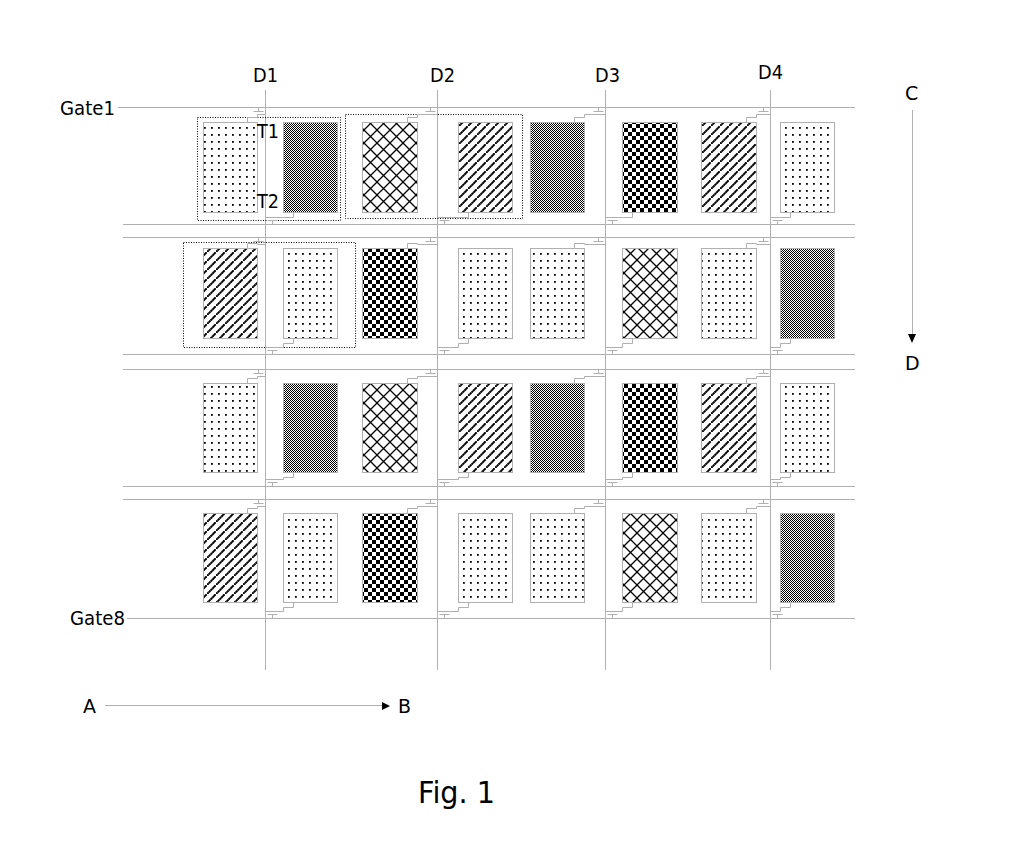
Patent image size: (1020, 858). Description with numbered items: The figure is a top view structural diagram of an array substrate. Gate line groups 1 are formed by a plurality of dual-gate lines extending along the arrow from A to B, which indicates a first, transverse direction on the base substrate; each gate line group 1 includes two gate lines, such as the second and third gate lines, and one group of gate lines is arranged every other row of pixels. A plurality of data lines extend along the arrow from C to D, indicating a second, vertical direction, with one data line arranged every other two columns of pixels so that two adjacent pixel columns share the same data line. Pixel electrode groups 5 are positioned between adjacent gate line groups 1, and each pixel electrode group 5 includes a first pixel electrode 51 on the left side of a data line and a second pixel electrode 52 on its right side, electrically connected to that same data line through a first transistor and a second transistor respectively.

The gate line group 1 is at (62, 246).
The pixel electrode group 5 is at (244, 142).
The first pixel electrode 51 is at (218, 130).
The second pixel electrode 52 is at (315, 122).